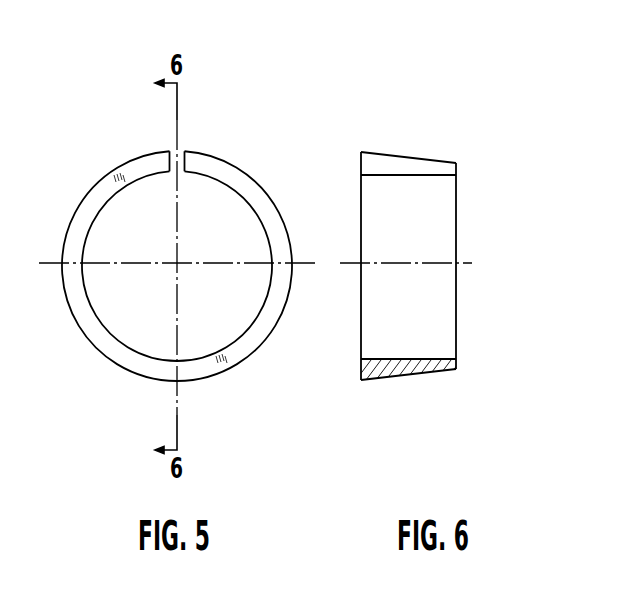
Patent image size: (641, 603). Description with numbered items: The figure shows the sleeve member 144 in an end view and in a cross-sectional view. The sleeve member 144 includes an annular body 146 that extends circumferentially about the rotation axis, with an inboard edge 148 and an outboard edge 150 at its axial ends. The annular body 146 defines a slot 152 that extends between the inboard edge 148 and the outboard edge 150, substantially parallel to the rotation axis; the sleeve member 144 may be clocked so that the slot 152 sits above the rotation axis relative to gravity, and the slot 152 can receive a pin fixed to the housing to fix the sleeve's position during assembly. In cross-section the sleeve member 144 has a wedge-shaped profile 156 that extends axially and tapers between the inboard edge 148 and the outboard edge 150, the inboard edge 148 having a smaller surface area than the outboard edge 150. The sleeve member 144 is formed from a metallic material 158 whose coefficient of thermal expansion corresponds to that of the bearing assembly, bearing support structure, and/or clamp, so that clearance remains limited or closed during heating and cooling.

In FIG. 5, the sleeve member 144 is at (161, 235).
In FIG. 6, the sleeve member 144 is at (397, 271).
In FIG. 5, the annular body 146 is at (161, 201).
In FIG. 6, the annular body 146 is at (423, 260).
In FIG. 5, the inboard edge 148 is at (146, 266).
In FIG. 6, the inboard edge 148 is at (457, 330).
In FIG. 5, the outboard edge 150 is at (87, 313).
In FIG. 6, the outboard edge 150 is at (361, 288).
In FIG. 5, the slot 152 is at (217, 73).
In FIG. 6, the slot 152 is at (388, 167).
In FIG. 5, the wedge-shaped profile 156 is at (177, 128).
In FIG. 6, the wedge-shaped profile 156 is at (401, 355).
In FIG. 6, the metallic material 158 is at (403, 375).